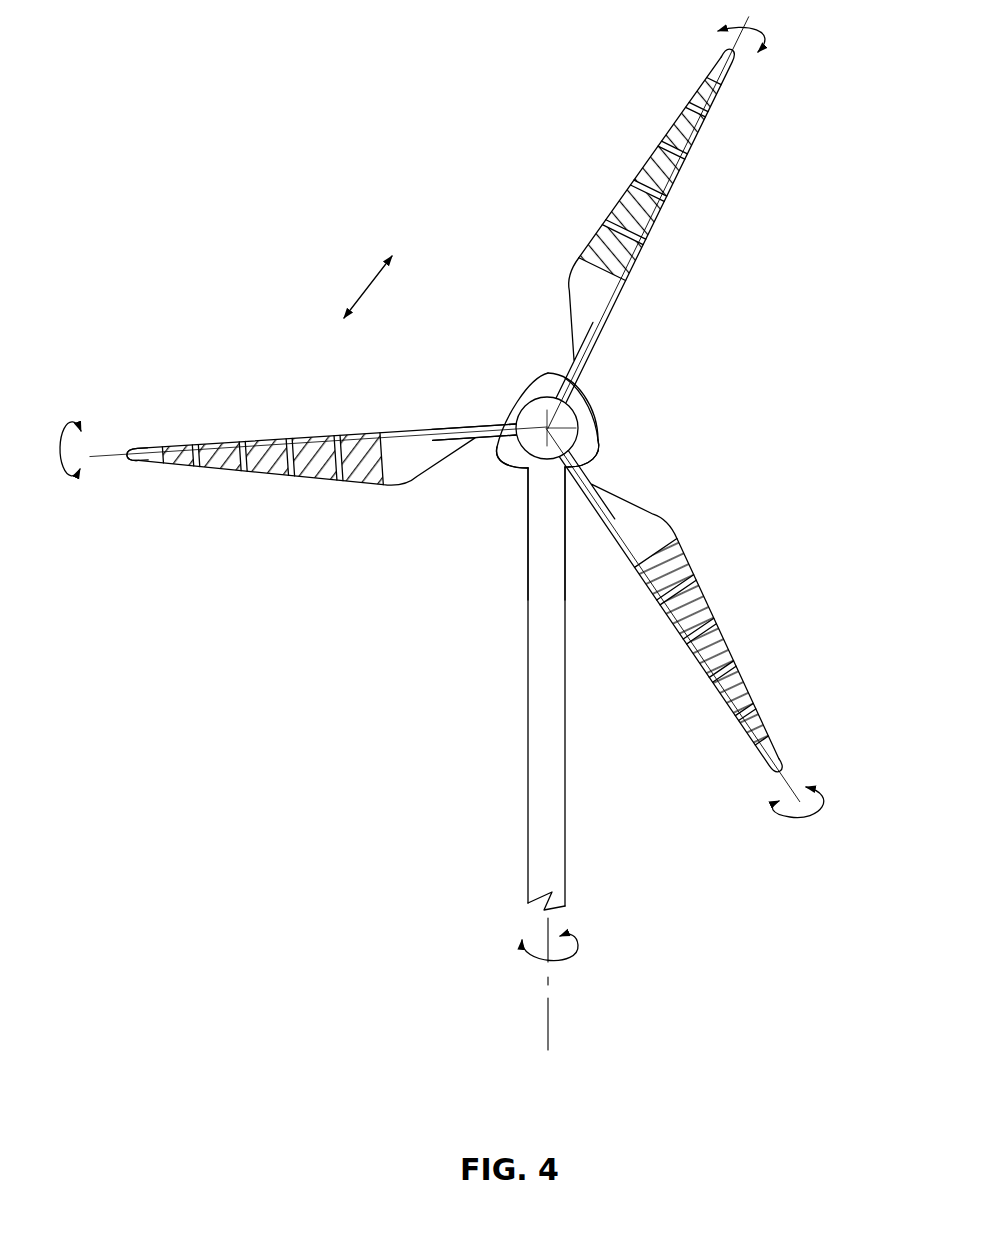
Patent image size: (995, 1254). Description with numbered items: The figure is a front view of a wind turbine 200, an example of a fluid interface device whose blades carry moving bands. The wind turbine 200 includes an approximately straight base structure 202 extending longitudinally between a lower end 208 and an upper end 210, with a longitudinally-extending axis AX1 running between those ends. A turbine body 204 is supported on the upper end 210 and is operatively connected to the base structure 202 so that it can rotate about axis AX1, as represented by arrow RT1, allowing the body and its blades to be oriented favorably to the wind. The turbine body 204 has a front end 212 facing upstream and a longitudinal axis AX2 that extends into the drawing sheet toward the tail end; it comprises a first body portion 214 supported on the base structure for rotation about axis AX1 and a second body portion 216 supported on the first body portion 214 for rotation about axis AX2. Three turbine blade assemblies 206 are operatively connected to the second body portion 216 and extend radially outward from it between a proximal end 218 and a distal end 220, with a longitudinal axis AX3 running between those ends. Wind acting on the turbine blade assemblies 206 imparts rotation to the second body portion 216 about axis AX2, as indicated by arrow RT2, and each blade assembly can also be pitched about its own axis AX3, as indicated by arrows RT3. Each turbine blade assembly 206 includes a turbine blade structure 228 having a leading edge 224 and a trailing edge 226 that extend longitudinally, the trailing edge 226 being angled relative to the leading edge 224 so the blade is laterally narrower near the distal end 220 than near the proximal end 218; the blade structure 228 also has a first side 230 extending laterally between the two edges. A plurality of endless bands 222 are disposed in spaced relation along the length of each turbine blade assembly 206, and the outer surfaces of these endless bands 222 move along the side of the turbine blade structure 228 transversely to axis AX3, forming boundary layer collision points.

The wind turbine 200 is at (270, 195).
The base structure 202 is at (528, 782).
The turbine body 204 is at (600, 415).
The turbine blade assemblies 206 is at (708, 182).
The lower end 208 is at (510, 891).
The upper end 210 is at (512, 538).
The front end 212 is at (587, 448).
The first body portion 214 is at (582, 398).
The second body portion 216 is at (517, 453).
The proximal end 218 is at (482, 425).
The distal end 220 is at (135, 452).
The endless bands 222 is at (651, 164).
The leading edge 224 is at (645, 235).
The trailing edge 226 is at (652, 162).
The turbine blade structure 228 is at (662, 512).
The first side 230 is at (590, 271).
The longitudinally-extending axis AX1 is at (552, 1022).
The longitudinal axis AX2 is at (546, 426).
The longitudinal axis AX3 is at (750, 33).
The arrow RT1 is at (580, 950).
The arrow RT2 is at (350, 272).
The arrows RT3 is at (712, 36).